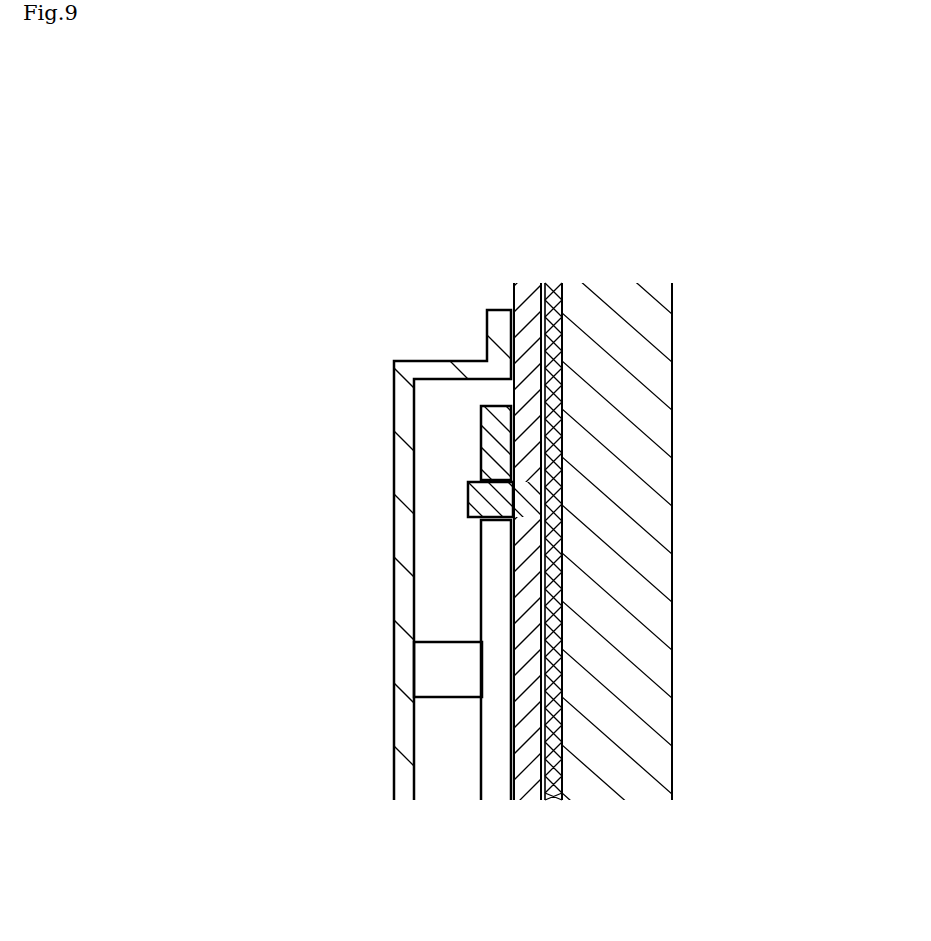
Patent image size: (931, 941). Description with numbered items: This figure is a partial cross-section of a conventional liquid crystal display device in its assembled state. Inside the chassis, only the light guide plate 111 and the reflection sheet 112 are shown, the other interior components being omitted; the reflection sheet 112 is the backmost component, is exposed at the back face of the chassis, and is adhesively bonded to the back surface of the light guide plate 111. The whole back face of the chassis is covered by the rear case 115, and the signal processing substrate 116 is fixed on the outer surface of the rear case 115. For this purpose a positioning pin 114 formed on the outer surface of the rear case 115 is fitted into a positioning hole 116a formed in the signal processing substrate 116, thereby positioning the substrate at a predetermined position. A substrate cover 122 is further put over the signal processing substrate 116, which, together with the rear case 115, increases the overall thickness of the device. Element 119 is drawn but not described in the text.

The light guide plate 111 is at (664, 466).
The reflection sheet 112 is at (560, 524).
The positioning pin 114 is at (480, 497).
The rear case 115 is at (514, 302).
The signal processing substrate 116 is at (473, 579).
The positioning hole 116a is at (471, 468).
The cushion member 119 is at (429, 677).
The substrate cover 122 is at (384, 404).